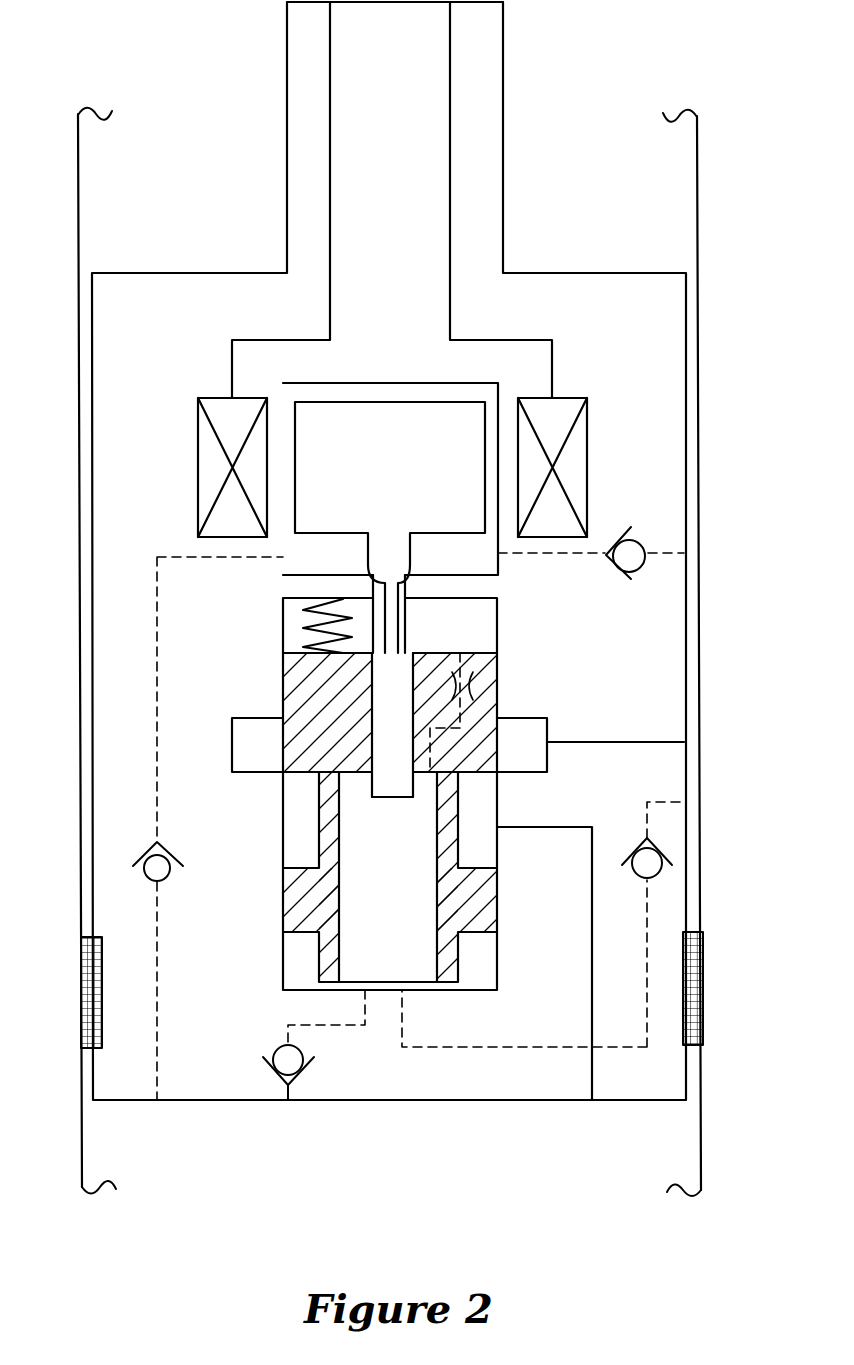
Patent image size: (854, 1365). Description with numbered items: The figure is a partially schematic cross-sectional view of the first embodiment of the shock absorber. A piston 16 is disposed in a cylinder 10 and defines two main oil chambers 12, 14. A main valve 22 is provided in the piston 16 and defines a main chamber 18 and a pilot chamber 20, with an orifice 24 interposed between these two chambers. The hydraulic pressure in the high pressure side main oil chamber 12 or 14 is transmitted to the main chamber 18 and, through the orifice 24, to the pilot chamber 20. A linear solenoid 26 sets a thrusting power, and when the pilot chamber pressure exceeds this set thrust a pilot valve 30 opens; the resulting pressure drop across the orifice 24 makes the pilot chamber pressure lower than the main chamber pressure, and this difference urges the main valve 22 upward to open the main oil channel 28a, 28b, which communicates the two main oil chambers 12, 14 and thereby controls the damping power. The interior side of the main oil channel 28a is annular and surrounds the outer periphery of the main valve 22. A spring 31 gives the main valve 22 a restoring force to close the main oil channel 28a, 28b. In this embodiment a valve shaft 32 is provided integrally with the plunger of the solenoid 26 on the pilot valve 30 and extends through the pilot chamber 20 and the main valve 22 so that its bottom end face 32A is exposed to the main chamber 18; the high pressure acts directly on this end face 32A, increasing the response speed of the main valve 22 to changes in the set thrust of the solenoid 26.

The cylinder 10 is at (696, 203).
The main oil chamber 12 is at (222, 187).
The main oil chamber 14 is at (243, 1163).
The piston 16 is at (681, 293).
The main chamber 18 is at (423, 958).
The pilot chamber 20 is at (483, 640).
The main valve 22 is at (490, 650).
The orifice 24 is at (450, 677).
The linear solenoid 26 is at (417, 372).
The main oil channel 28a is at (613, 742).
The main oil channel 28b is at (592, 1068).
The pilot valve 30 is at (420, 567).
The spring 31 is at (283, 632).
The valve shaft 32 is at (372, 736).
The bottom end face 32A is at (392, 798).